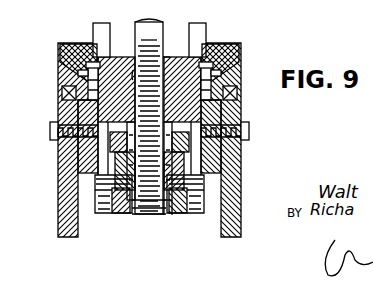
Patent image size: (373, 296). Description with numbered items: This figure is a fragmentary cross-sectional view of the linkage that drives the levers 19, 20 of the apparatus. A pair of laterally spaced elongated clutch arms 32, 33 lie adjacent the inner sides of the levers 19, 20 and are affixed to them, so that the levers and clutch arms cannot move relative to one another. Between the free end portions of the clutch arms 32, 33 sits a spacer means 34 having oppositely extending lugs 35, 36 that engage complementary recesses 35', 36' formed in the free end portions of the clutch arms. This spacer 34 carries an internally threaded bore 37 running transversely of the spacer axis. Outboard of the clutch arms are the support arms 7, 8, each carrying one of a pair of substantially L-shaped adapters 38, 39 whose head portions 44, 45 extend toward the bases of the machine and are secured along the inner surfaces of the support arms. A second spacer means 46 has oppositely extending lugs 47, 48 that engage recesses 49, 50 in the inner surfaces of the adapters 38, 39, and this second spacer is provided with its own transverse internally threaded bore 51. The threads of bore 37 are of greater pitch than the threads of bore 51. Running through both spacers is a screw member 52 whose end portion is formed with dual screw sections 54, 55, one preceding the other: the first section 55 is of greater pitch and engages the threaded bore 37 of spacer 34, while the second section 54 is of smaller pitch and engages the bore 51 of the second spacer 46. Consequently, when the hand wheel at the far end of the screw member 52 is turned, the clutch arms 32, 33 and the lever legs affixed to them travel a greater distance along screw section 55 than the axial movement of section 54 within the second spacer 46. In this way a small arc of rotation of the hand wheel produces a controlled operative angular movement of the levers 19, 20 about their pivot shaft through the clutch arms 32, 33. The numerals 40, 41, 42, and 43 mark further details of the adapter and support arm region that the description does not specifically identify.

The support arm 7 is at (60, 233).
The support arm 8 is at (240, 222).
The lever 19 is at (92, 24).
The lever 20 is at (208, 30).
The clutch arm 32 is at (118, 218).
The clutch arm 33 is at (195, 218).
The spacer means 34 is at (160, 214).
The lug 35 is at (222, 171).
The recess 35' is at (239, 136).
The lug 36 is at (75, 172).
The recess 36' is at (68, 136).
The internally threaded bore 37 is at (141, 213).
The L-shaped adapter 38 is at (233, 45).
The L-shaped adapter 39 is at (75, 44).
The right bolt 40 is at (212, 78).
The left lock block 41 is at (62, 90).
The left spring 42 is at (52, 127).
The right lock block 43 is at (238, 92).
The head portion 44 is at (222, 184).
The head portion 45 is at (88, 181).
The second spacer means 46 is at (176, 50).
The lug 47 is at (78, 73).
The lug 48 is at (222, 72).
The recess 49 is at (87, 70).
The recess 50 is at (246, 130).
The internally threaded bore 51 is at (133, 77).
The screw member 52 is at (155, 44).
The second screw section 54 is at (151, 34).
The first screw section 55 is at (155, 208).